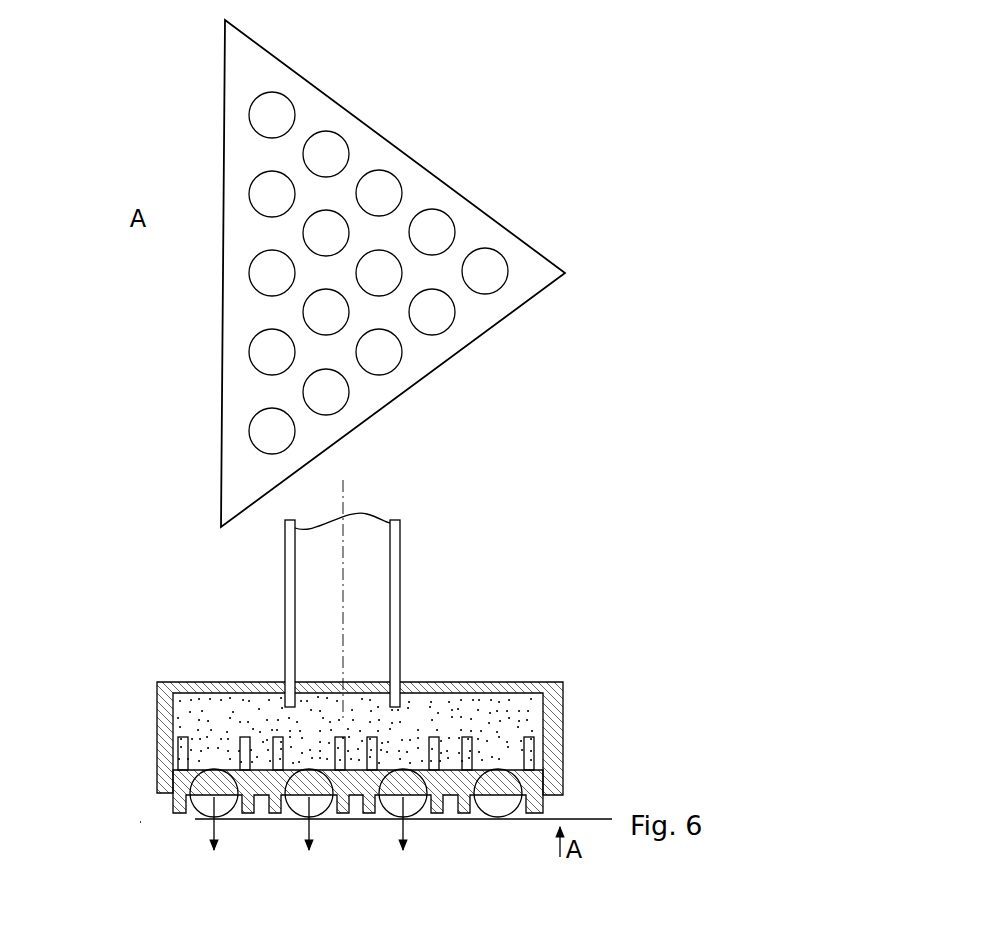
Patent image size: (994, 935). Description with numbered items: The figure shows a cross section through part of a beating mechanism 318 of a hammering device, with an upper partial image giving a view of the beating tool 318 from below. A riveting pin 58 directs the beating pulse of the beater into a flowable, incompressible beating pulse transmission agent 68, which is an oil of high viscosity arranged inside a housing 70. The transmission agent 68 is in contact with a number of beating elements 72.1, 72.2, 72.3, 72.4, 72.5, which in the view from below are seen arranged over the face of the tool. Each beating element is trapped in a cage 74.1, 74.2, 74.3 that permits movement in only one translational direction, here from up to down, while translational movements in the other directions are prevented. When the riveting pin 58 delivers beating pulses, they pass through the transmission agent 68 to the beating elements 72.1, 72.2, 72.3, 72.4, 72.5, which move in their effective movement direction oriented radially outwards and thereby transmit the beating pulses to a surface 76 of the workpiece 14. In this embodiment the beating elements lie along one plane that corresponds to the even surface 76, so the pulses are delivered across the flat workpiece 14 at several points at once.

The workpiece / substrate 14 is at (140, 822).
The riveting pin 58 is at (312, 700).
The beating pulse transmission agent 68 is at (537, 723).
The housing 70 is at (485, 693).
The beating element 72.1 is at (268, 115).
The beating element 72.2 is at (327, 152).
The beating element 72.3 is at (383, 190).
The beating element 72.4 is at (437, 232).
The beating element 72.5 is at (493, 267).
The cage 74.1 is at (238, 810).
The cage 74.2 is at (328, 820).
The cage 74.3 is at (425, 820).
The surface 76 is at (120, 780).
The beating mechanism 318 is at (450, 518).